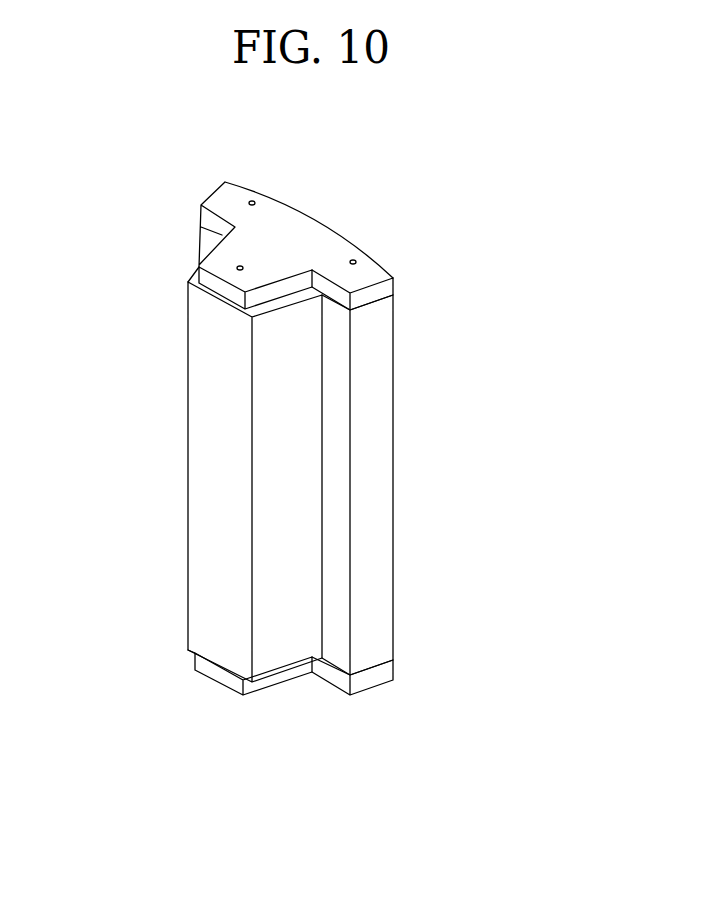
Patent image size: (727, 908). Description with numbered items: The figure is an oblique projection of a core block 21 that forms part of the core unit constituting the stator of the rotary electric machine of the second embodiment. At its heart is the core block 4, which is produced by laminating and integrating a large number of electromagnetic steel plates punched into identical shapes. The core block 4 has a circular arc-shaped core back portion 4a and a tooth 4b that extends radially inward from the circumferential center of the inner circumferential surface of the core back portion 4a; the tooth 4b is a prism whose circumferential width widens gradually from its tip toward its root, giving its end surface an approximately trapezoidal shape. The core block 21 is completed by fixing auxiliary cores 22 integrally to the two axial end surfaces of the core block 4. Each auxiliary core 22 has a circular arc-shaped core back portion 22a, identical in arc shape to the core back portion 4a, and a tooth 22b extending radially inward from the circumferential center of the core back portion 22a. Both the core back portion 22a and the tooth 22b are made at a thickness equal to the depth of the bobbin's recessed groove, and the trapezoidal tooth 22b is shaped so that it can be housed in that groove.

The core block 21 is at (98, 128).
The auxiliary core 22 is at (356, 247).
The core back portion 22a is at (310, 236).
The tooth 22b is at (225, 260).
The core block 4 is at (398, 352).
The core back portion 4a is at (383, 418).
The tooth 4b is at (203, 398).